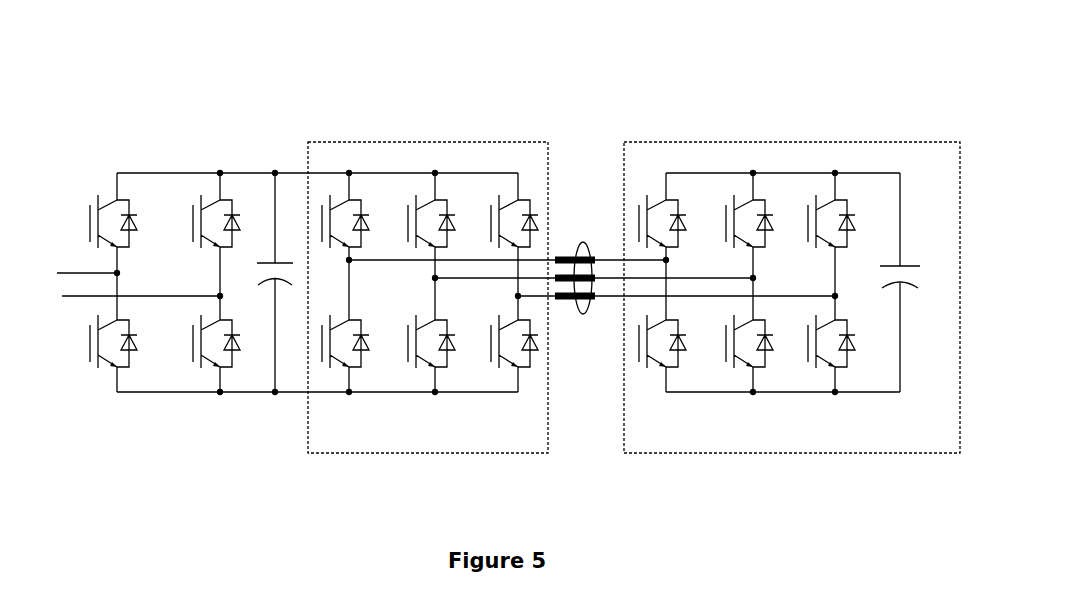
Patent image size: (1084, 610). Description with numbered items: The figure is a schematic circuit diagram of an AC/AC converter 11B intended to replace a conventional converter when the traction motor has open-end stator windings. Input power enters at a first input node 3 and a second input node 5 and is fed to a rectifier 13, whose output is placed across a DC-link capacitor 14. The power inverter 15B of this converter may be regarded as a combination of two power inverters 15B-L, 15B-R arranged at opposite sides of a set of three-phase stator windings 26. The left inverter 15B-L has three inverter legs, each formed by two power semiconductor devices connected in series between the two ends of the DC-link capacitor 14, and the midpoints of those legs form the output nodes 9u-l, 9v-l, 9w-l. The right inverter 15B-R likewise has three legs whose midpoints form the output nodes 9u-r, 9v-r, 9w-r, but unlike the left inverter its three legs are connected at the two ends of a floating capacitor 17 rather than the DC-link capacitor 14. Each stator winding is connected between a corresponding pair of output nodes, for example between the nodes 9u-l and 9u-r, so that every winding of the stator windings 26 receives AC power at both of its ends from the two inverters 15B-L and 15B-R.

The AC/AC converter 11B is at (793, 90).
The first input node 3 is at (72, 269).
The second input node 5 is at (71, 302).
The rectifier 13 is at (90, 423).
The DC-link capacitor 14 is at (263, 285).
The power inverter 15B is at (318, 420).
The power inverter 15B-L is at (350, 140).
The power inverter 15B-R is at (682, 117).
The three-phase stator windings 26 is at (583, 243).
The output node 9u-l is at (507, 274).
The output node 9v-l is at (593, 293).
The output node 9w-l is at (676, 311).
The output node 9u-r is at (692, 261).
The output node 9v-r is at (778, 280).
The output node 9w-r is at (862, 301).
The floating capacitor 17 is at (910, 290).